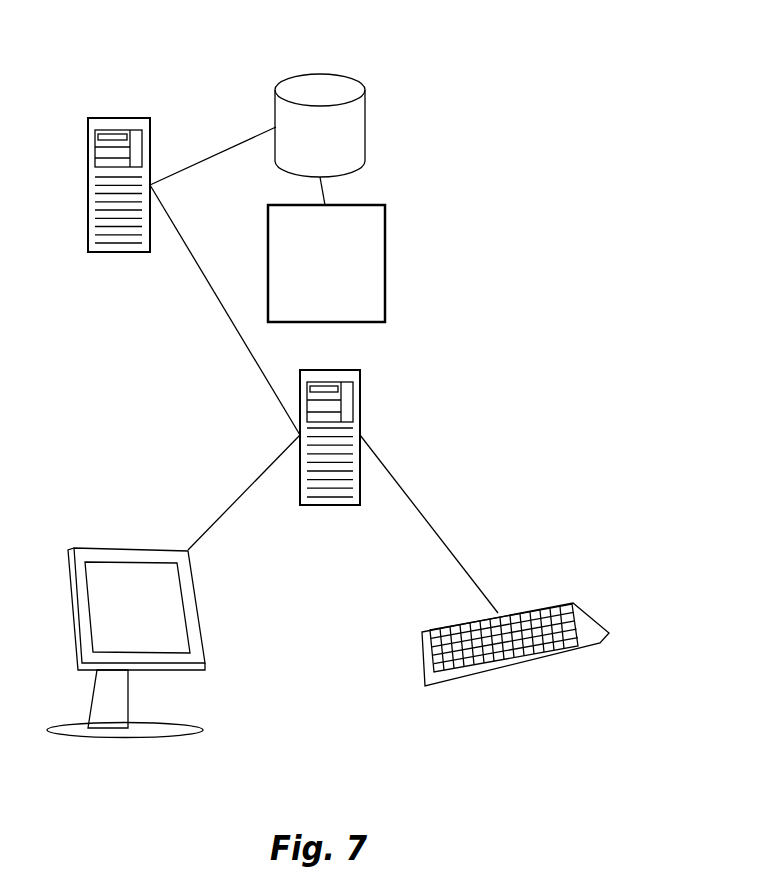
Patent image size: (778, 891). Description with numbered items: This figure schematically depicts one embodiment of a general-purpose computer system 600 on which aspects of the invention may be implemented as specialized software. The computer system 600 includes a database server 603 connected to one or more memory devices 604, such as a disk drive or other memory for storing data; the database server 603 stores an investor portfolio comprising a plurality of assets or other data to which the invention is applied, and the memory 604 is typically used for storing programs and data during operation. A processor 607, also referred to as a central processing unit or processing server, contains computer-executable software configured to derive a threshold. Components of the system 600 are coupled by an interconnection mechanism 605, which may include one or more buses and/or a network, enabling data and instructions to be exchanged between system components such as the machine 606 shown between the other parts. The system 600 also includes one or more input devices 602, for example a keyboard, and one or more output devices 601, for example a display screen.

The computer system 600 is at (447, 86).
The output device 601 is at (118, 545).
The input device 602 is at (515, 612).
The database server 603 is at (122, 117).
The memory device 604 is at (348, 73).
The interconnection mechanism 605 is at (212, 285).
The client computer 606 is at (362, 432).
The processor 607 is at (385, 275).